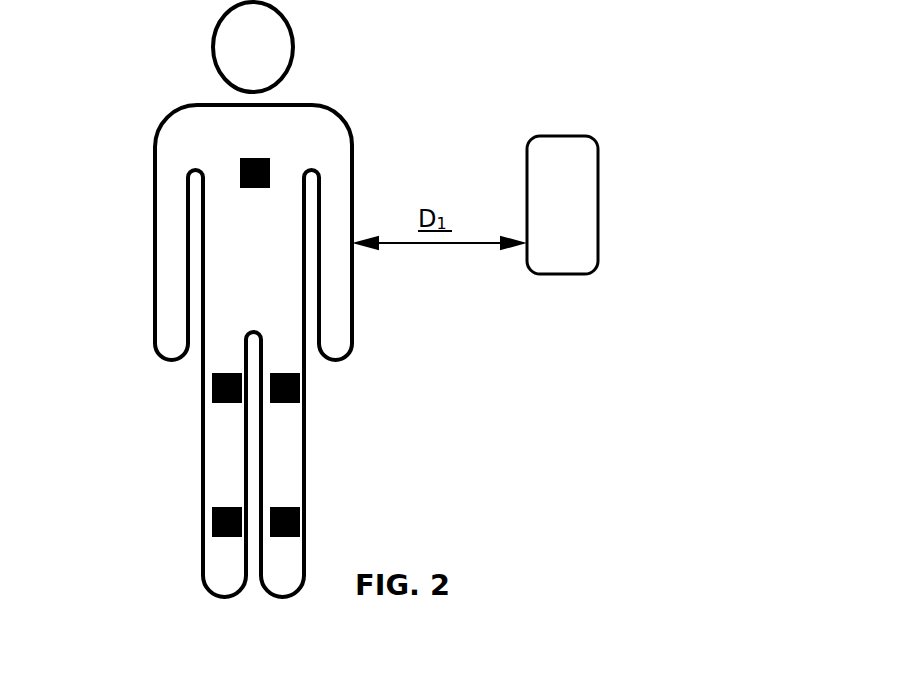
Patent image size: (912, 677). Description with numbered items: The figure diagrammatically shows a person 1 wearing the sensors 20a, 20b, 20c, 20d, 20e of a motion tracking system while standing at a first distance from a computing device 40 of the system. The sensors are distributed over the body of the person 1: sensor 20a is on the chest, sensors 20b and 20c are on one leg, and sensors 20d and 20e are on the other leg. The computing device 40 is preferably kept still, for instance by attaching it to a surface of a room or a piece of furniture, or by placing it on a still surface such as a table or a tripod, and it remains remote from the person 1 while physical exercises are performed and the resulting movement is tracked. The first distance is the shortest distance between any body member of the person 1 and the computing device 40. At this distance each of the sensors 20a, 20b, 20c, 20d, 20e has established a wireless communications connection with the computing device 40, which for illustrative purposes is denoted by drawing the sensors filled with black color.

The person 1 is at (295, 112).
The sensor 20a is at (240, 172).
The sensor 20b is at (212, 383).
The sensor 20c is at (212, 517).
The sensor 20d is at (300, 383).
The sensor 20e is at (300, 517).
The computing device 40 is at (560, 177).